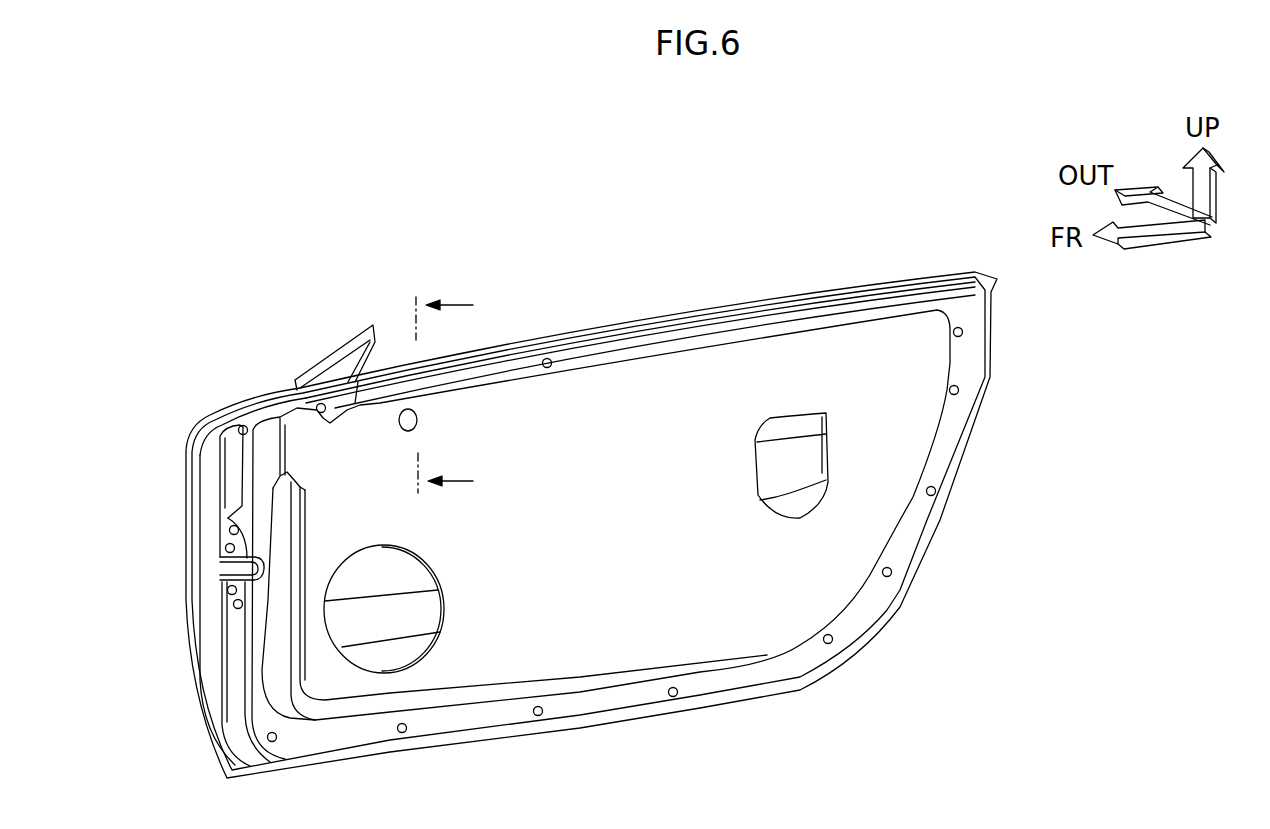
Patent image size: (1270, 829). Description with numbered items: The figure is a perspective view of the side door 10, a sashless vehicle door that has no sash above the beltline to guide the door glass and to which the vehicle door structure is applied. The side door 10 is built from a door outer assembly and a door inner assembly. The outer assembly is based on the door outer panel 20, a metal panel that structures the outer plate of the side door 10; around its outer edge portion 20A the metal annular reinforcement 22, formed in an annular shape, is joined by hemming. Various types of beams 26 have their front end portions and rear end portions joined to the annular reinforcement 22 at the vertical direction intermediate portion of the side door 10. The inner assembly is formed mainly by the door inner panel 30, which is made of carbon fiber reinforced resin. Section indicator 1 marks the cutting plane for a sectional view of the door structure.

The side door 10 is at (310, 222).
The door outer panel 20 is at (218, 422).
The outer edge portion 20A is at (196, 518).
The annular reinforcement 22 is at (218, 662).
The beams 26 is at (376, 612).
The door inner panel 30 is at (775, 633).
The section line 1 is at (454, 391).